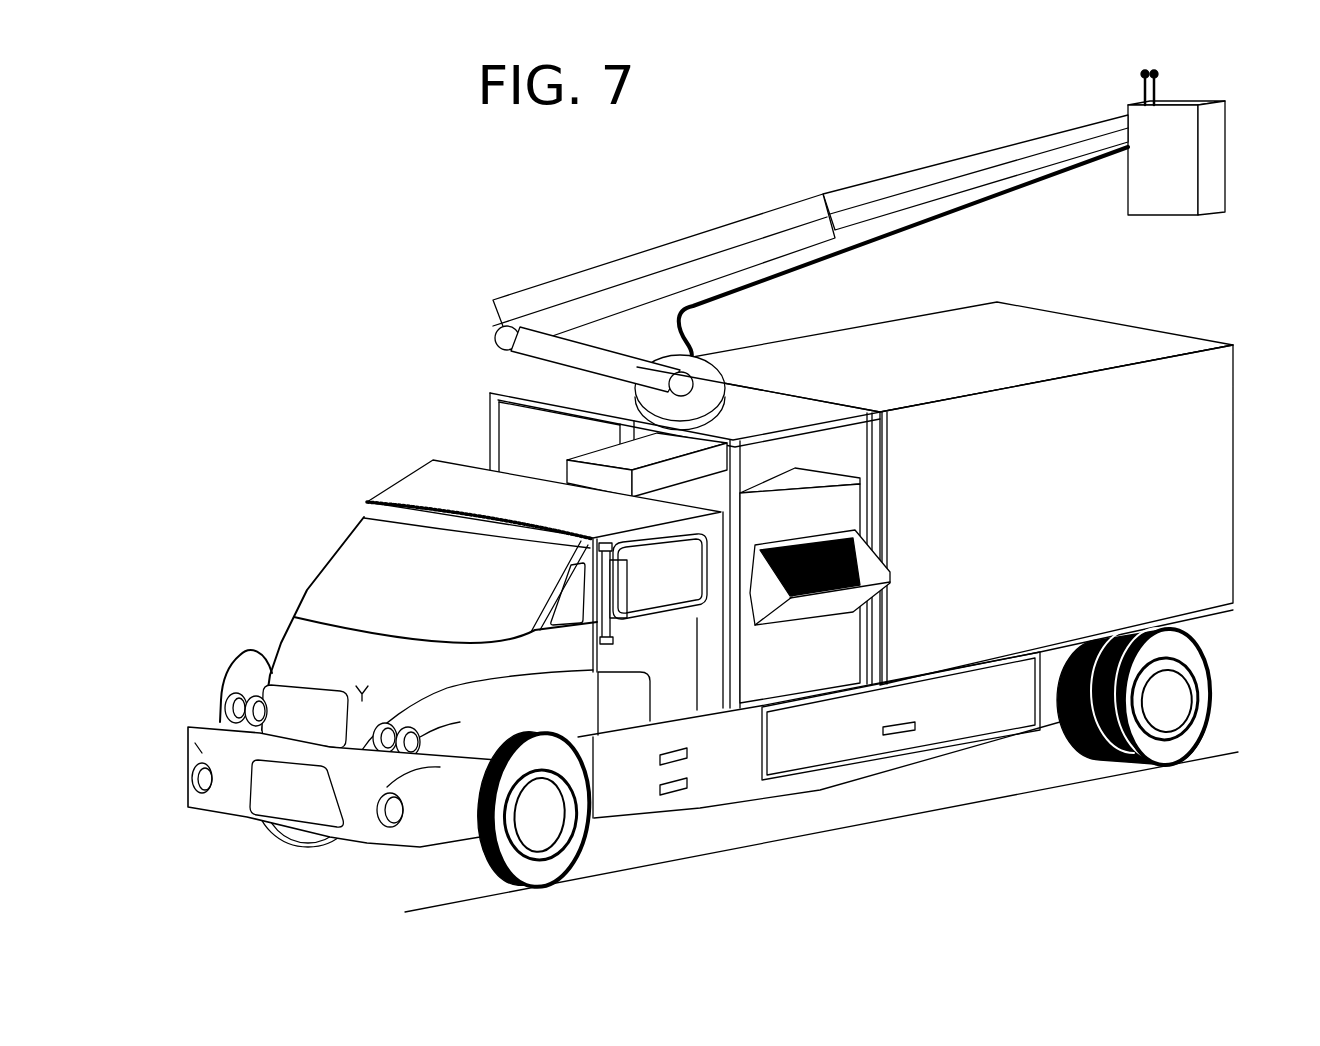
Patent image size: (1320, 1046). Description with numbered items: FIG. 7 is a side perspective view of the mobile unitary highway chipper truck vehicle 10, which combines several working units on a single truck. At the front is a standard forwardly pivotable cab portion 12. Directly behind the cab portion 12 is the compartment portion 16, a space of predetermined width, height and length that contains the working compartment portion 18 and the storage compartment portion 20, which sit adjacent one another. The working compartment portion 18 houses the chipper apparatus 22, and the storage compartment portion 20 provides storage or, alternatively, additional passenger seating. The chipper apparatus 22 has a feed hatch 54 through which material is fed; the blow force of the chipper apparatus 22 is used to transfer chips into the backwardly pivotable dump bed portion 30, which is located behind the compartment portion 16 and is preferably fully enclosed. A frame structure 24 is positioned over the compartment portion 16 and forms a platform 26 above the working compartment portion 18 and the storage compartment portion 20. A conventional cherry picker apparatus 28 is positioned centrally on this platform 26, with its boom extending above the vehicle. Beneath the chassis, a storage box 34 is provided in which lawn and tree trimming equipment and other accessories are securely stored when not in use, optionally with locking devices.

The mobile unitary highway chipper truck vehicle 10 is at (220, 240).
The cab portion 12 is at (304, 595).
The compartment portion 16 is at (533, 425).
The working compartment portion 18 is at (829, 463).
The storage compartment portion 20 is at (585, 440).
The chipper apparatus 22 is at (835, 590).
The frame structure 24 is at (490, 418).
The platform 26 is at (740, 420).
The cherry picker apparatus 28 is at (597, 267).
The backwardly pivotable dump bed portion 30 is at (1125, 370).
The storage box 34 is at (990, 717).
The feed hatch 54 is at (798, 612).